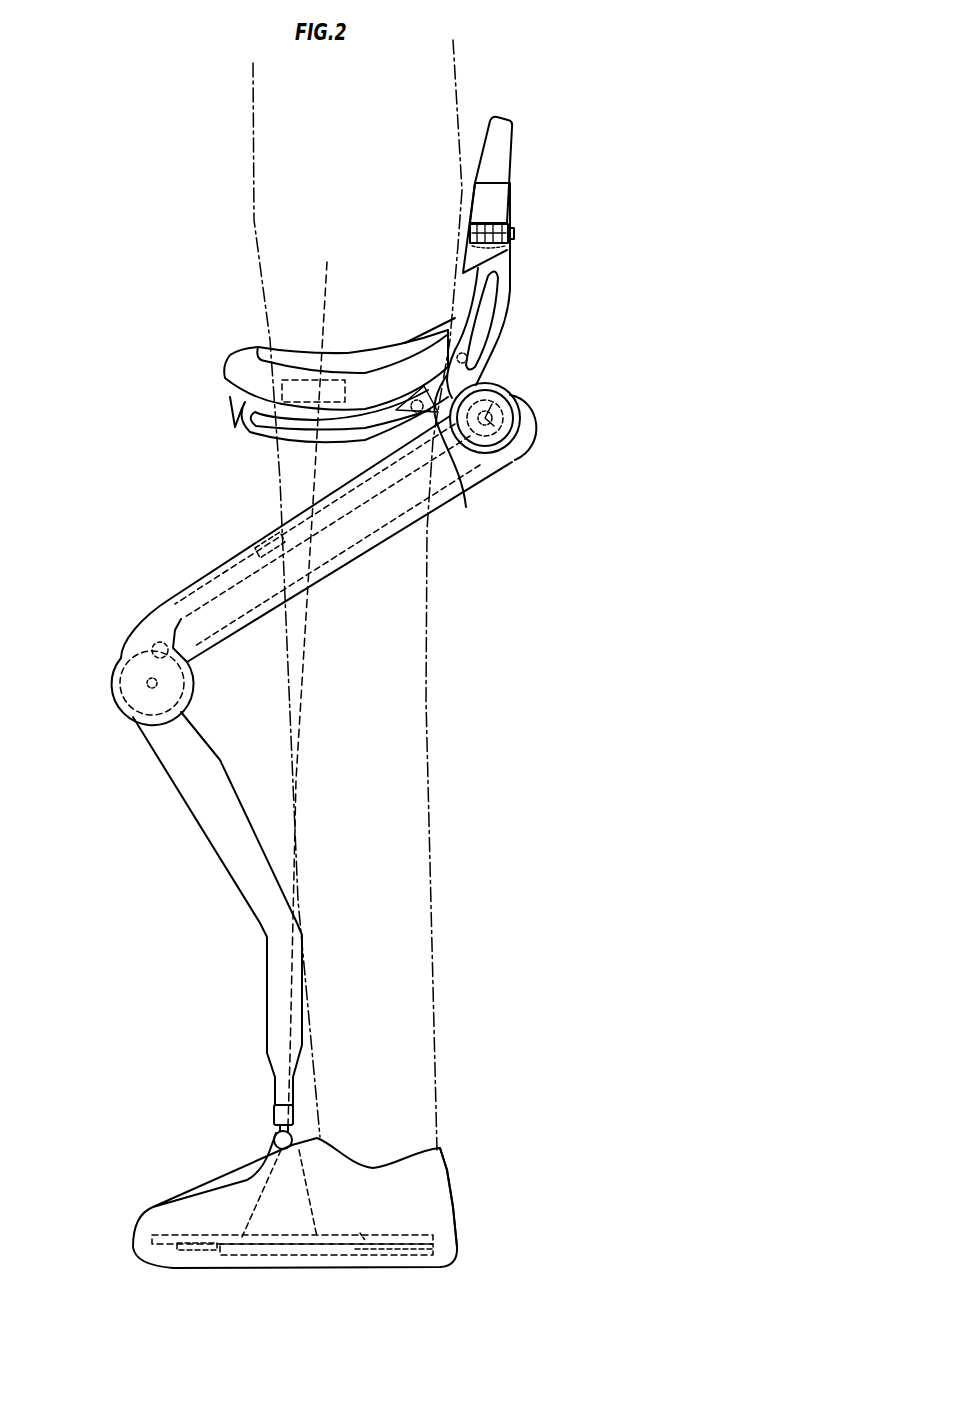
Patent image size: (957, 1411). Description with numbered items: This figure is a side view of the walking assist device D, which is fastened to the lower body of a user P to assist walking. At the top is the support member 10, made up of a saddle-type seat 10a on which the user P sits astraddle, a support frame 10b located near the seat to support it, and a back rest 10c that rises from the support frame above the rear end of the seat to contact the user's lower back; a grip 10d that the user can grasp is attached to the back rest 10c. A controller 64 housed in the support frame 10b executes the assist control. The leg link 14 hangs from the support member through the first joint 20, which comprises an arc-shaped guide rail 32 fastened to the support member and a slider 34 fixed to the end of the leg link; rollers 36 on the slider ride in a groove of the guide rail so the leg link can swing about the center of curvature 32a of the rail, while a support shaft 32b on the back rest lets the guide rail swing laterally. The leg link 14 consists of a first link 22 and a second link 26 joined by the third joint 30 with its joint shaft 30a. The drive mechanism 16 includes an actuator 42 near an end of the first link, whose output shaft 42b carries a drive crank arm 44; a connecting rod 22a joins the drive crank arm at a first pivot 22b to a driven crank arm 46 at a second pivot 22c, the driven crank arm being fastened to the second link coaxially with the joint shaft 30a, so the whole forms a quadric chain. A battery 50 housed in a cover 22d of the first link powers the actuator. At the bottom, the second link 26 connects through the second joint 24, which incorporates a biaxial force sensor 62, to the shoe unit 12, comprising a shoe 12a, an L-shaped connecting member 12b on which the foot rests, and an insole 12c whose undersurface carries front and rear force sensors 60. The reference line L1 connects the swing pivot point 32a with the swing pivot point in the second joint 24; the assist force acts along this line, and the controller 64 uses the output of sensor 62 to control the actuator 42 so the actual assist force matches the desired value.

The support member 10 is at (312, 336).
The saddle-type seat 10a is at (413, 337).
The support frame 10b is at (240, 362).
The back rest 10c is at (465, 260).
The grip 10d is at (503, 118).
The shoe unit 12 is at (316, 1225).
The shoe 12a is at (453, 1207).
The connecting member 12b is at (266, 1162).
The insole 12c is at (360, 1233).
The leg link 14 is at (104, 637).
The drive mechanism 16 is at (345, 539).
The first joint 20 is at (525, 330).
The first link 22 is at (322, 539).
The connecting rod 22a is at (383, 547).
The first pivot 22b is at (513, 457).
The second pivot 22c is at (158, 643).
The cover 22d is at (430, 517).
The second joint 24 is at (245, 1141).
The second link 26 is at (260, 930).
The third joint 30 is at (104, 676).
The joint shaft 30a is at (150, 683).
The guide rail 32 is at (506, 303).
The center of curvature 32a is at (327, 262).
The support shaft 32b is at (514, 234).
The slider 34 is at (457, 456).
The rollers 36 is at (457, 360).
The actuator 42 is at (520, 453).
The output shaft 42b is at (502, 392).
The drive crank arm 44 is at (517, 417).
The driven crank arm 46 is at (120, 650).
The battery 50 is at (325, 527).
The force sensors 60 is at (457, 1252).
The biaxial force sensor 62 is at (273, 1110).
The controller 64 is at (300, 380).
The reference line L1 is at (303, 783).
The user P is at (254, 222).
The walking assist device D is at (566, 146).